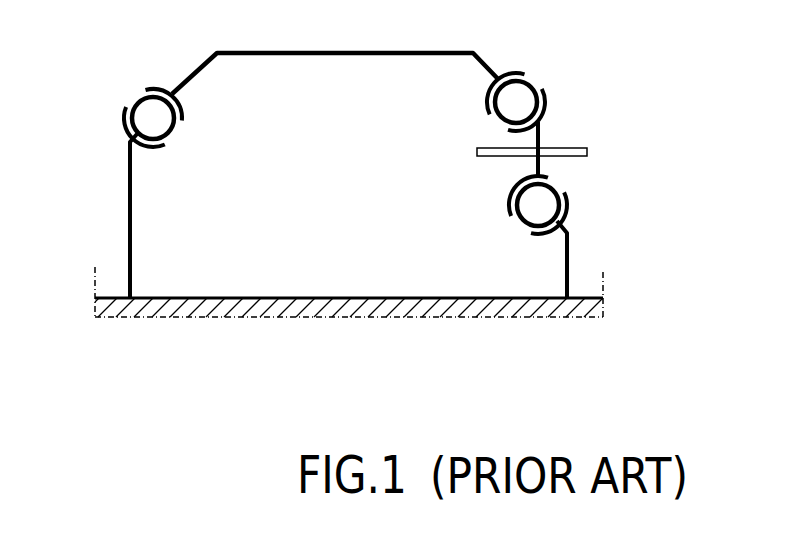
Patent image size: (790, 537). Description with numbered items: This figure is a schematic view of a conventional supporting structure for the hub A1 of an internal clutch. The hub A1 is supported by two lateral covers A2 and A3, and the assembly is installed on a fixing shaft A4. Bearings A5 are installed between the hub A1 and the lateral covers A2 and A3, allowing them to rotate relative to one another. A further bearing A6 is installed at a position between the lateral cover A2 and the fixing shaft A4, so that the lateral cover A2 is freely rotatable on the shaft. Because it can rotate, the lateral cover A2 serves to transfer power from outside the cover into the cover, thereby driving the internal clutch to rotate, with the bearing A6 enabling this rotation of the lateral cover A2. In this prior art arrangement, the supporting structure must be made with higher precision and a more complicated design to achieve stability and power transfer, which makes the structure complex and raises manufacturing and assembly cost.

The hub A1 is at (330, 52).
The lateral cover A2 is at (540, 130).
The lateral cover A3 is at (130, 188).
The fixing shaft A4 is at (343, 298).
The bearings A5 is at (520, 97).
The bearing A6 is at (547, 207).